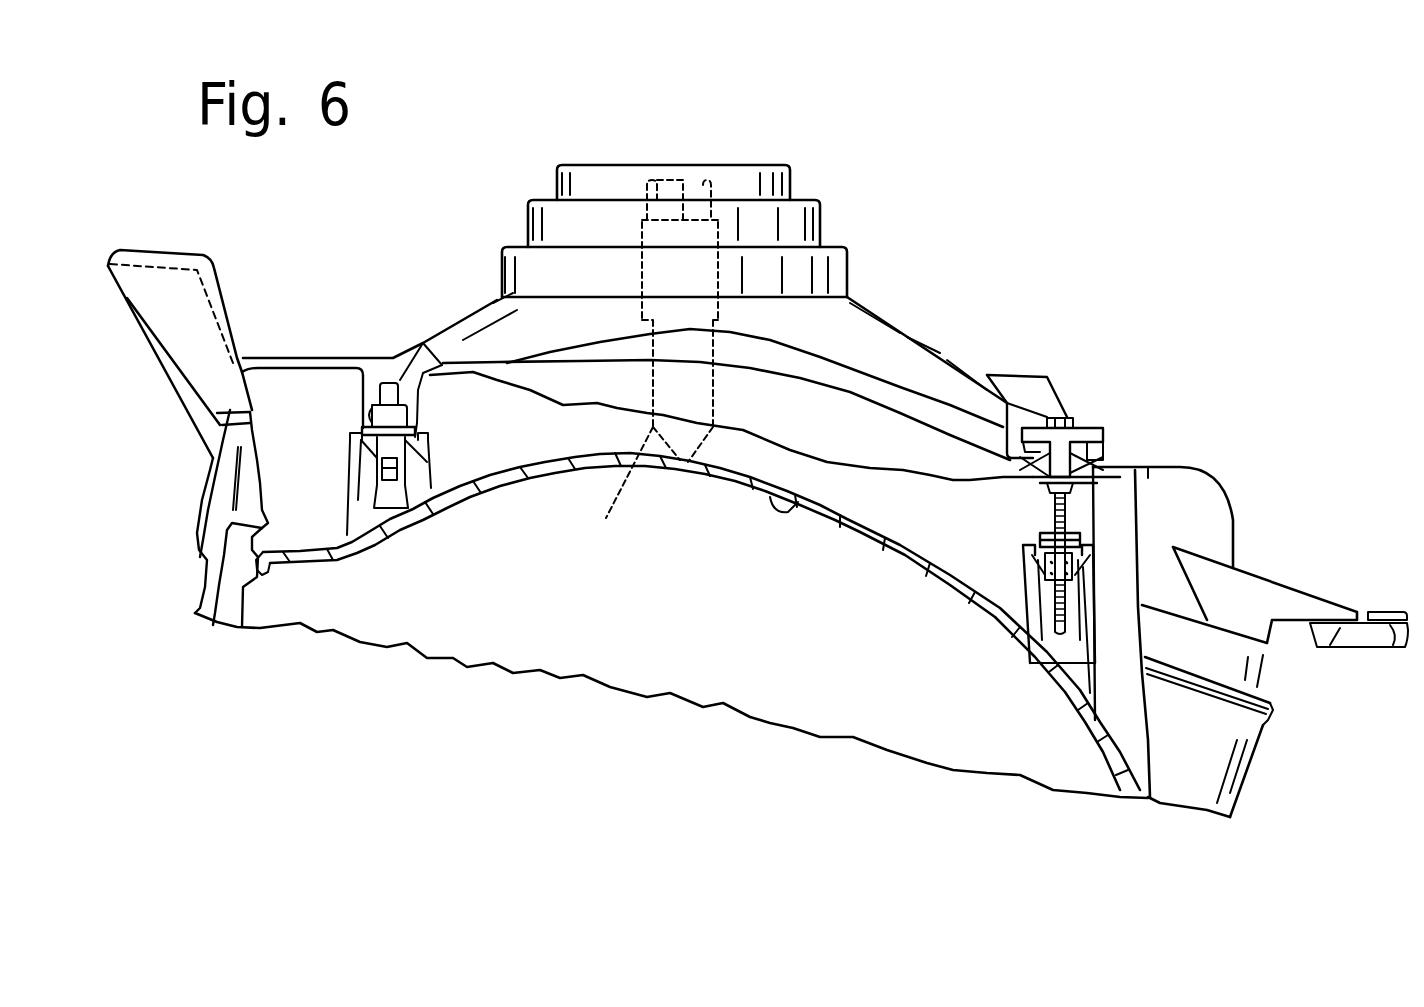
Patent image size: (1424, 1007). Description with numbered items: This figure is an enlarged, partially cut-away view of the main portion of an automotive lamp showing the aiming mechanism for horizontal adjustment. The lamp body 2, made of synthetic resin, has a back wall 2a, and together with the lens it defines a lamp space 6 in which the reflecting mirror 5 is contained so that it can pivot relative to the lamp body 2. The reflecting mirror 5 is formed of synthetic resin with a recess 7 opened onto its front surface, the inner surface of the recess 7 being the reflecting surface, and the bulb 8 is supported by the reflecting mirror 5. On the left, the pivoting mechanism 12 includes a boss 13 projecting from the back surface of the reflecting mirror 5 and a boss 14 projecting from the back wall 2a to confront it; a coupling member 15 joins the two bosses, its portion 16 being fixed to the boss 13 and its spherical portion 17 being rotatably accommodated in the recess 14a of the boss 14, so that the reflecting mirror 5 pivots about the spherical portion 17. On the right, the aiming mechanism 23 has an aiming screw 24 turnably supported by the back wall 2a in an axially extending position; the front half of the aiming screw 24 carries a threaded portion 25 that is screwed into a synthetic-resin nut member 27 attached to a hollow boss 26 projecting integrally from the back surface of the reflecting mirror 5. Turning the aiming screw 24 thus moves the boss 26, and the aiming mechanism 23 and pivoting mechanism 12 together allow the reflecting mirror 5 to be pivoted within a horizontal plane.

The lamp body 2 is at (1213, 495).
The back wall 2a is at (337, 356).
The reflecting mirror 5 is at (855, 533).
The lamp space 6 is at (717, 649).
The recess 7 is at (792, 511).
The bulb 8 is at (658, 366).
The pivoting mechanism 12 is at (322, 393).
The boss 13 is at (427, 457).
The boss 14 is at (365, 402).
The recess 14a is at (358, 432).
The coupling member 15 is at (373, 533).
The portion 16 is at (405, 503).
The spherical portion 17 is at (400, 407).
The aiming mechanism 23 is at (1088, 503).
The aiming screw 24 is at (1087, 414).
The threaded portion 25 is at (1045, 628).
The hollow boss 26 is at (1020, 568).
The nut member 27 is at (1053, 534).